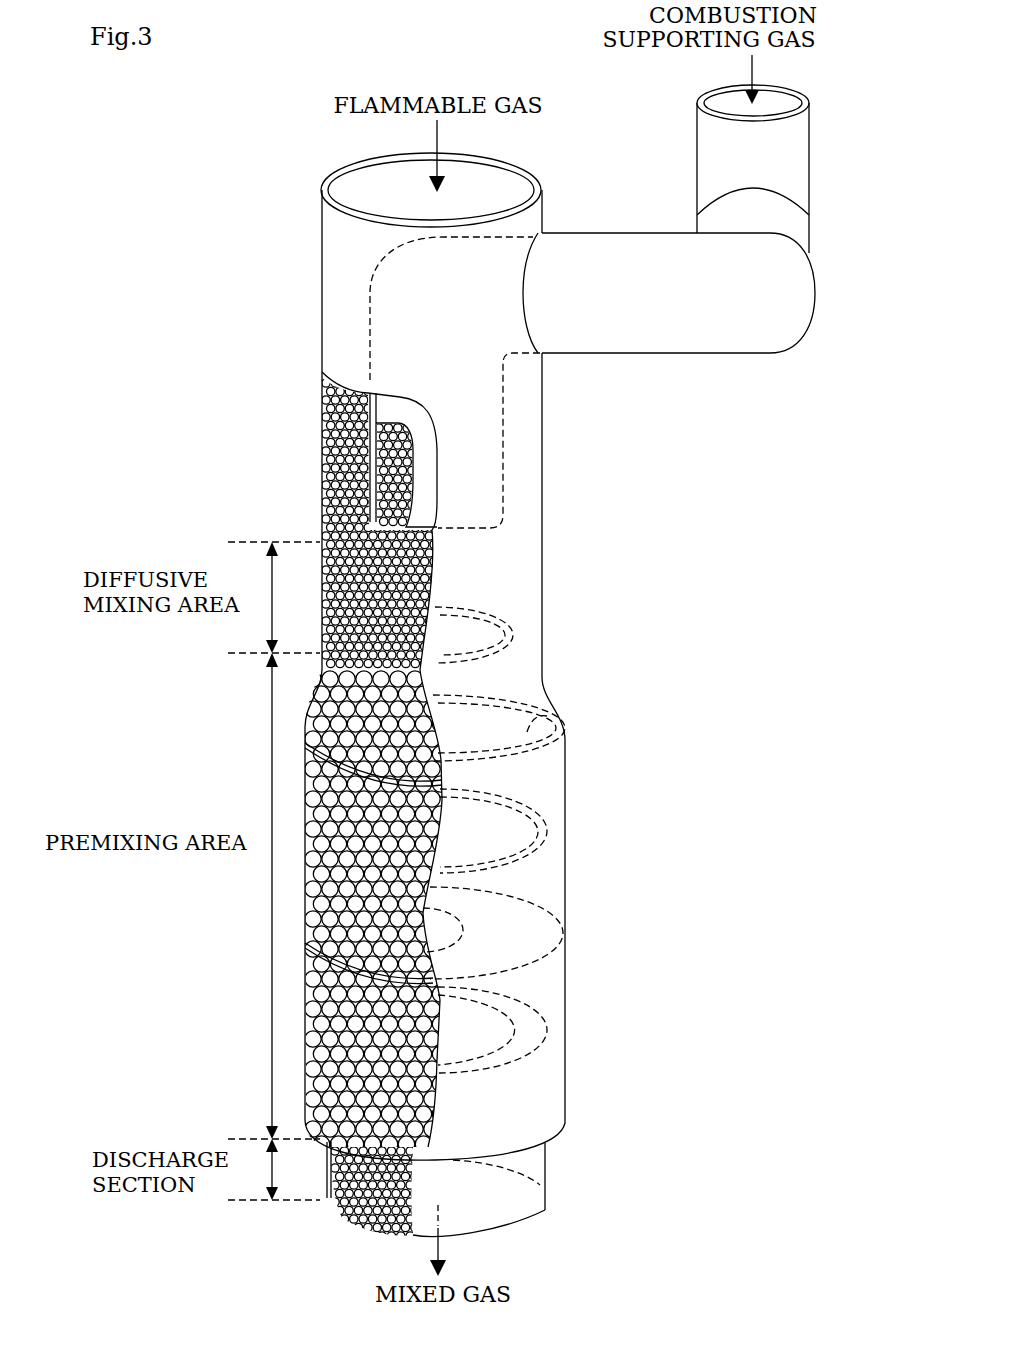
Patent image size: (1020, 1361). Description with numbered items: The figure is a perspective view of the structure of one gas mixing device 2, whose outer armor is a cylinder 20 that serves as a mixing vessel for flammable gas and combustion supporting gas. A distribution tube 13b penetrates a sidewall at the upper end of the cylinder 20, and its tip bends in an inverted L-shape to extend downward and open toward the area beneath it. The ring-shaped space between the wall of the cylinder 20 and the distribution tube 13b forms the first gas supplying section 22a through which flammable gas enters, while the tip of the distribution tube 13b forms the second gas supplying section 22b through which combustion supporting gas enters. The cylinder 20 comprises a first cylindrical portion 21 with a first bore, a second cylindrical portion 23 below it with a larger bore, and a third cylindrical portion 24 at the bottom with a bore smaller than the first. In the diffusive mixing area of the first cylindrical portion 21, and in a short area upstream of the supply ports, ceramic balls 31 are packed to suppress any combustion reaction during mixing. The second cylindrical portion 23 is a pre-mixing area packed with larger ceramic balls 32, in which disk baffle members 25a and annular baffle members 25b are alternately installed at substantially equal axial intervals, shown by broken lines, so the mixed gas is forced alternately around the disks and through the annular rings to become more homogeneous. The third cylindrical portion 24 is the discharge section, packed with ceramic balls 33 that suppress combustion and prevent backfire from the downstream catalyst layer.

The gas mixing device 2 is at (232, 217).
The distribution tube 13b is at (507, 433).
The cylinder 20 is at (650, 532).
The first cylindrical portion 21 is at (542, 490).
The first gas supplying section 22a is at (343, 490).
The second gas supplying section 22b is at (345, 443).
The second cylindrical portion 23 is at (566, 880).
The third cylindrical portion 24 is at (545, 1165).
The disk baffle member 25a is at (540, 602).
The annular baffle member 25b is at (528, 713).
The ceramic balls 31 is at (360, 525).
The ceramic balls 32 is at (305, 790).
The ceramic balls 33 is at (353, 1217).